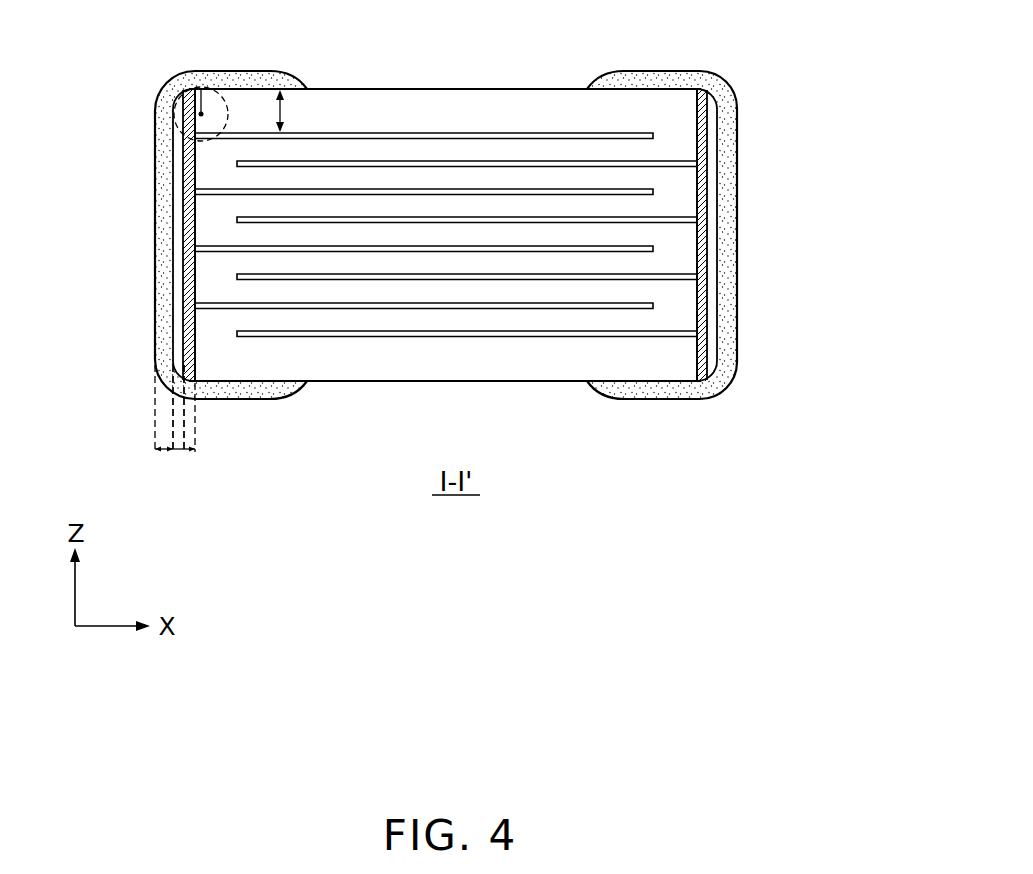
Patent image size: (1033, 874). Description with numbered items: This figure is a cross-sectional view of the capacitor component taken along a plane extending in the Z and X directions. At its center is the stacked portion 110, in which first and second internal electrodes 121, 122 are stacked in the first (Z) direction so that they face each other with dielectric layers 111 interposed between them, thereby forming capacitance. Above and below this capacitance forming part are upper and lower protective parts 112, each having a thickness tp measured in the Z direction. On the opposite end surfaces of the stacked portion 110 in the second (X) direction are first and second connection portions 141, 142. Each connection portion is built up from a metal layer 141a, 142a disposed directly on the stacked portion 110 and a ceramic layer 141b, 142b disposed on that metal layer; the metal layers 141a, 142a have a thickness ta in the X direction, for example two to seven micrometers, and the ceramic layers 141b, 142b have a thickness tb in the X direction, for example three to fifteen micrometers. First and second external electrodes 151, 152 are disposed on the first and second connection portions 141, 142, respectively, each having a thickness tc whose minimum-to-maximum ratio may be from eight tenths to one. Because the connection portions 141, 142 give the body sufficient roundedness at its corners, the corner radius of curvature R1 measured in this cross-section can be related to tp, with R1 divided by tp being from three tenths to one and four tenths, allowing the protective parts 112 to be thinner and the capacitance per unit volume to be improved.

The stacked portion 110 is at (384, 89).
The protective part 112 is at (436, 108).
The dielectric layer 111 is at (505, 150).
The first internal electrode 121 is at (475, 135).
The second internal electrode 122 is at (550, 165).
The first connection portion 141 is at (75, 167).
The metal layer 141a is at (188, 180).
The ceramic layer 141b is at (178, 232).
The second connection portion 142 is at (817, 167).
The metal layer 142a is at (700, 180).
The ceramic layer 142b is at (712, 232).
The first external electrode 151 is at (195, 85).
The second external electrode 152 is at (665, 82).
The radius of curvature R1 is at (236, 97).
The thickness of protective part tp is at (282, 110).
The thickness of metal layer ta is at (190, 452).
The thickness of ceramic layer tb is at (185, 452).
The thickness of external electrode tc is at (156, 452).